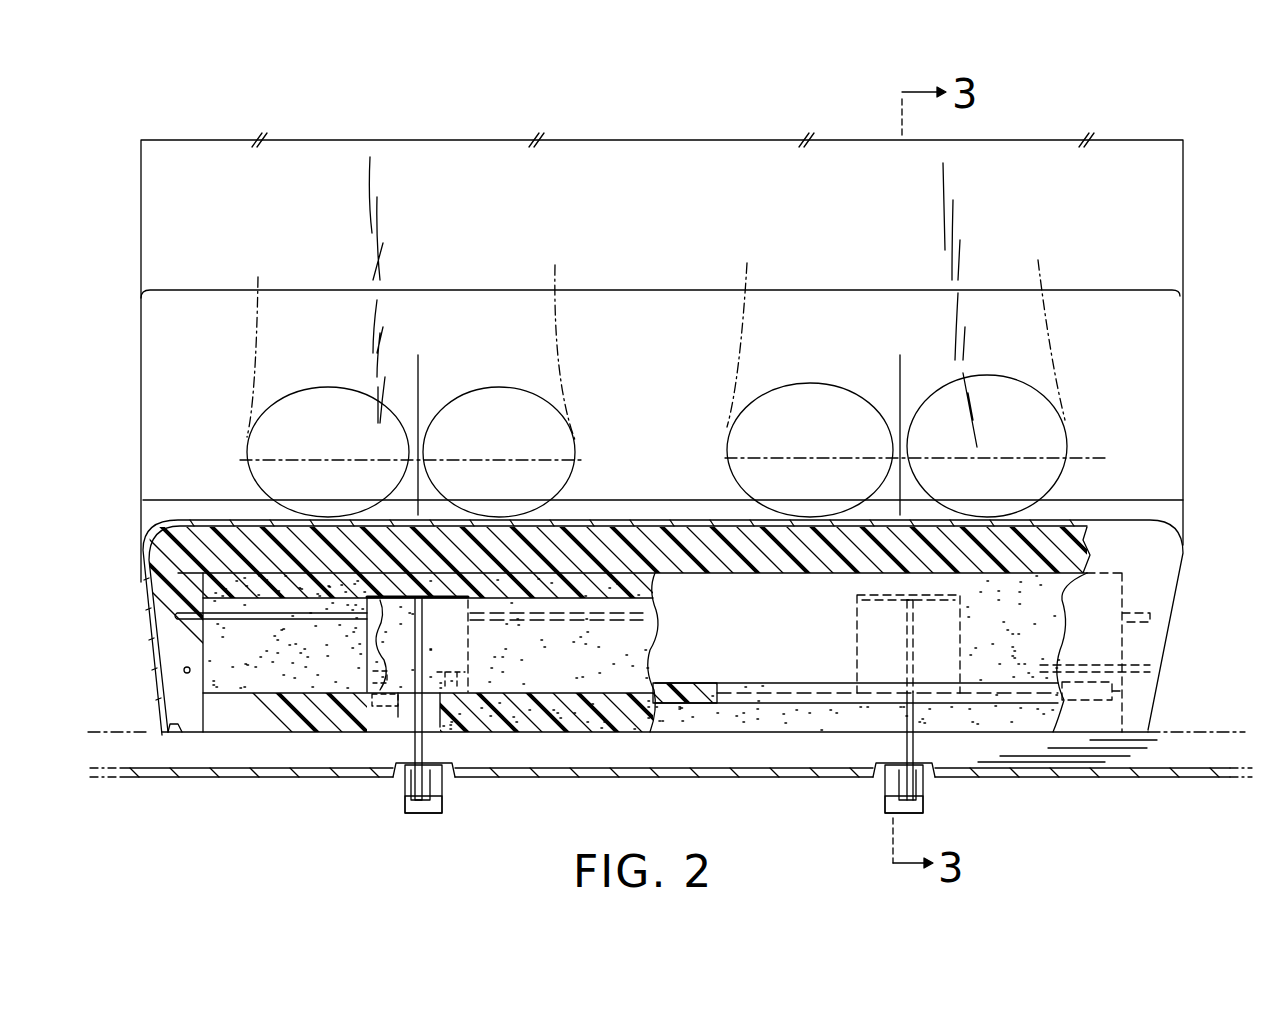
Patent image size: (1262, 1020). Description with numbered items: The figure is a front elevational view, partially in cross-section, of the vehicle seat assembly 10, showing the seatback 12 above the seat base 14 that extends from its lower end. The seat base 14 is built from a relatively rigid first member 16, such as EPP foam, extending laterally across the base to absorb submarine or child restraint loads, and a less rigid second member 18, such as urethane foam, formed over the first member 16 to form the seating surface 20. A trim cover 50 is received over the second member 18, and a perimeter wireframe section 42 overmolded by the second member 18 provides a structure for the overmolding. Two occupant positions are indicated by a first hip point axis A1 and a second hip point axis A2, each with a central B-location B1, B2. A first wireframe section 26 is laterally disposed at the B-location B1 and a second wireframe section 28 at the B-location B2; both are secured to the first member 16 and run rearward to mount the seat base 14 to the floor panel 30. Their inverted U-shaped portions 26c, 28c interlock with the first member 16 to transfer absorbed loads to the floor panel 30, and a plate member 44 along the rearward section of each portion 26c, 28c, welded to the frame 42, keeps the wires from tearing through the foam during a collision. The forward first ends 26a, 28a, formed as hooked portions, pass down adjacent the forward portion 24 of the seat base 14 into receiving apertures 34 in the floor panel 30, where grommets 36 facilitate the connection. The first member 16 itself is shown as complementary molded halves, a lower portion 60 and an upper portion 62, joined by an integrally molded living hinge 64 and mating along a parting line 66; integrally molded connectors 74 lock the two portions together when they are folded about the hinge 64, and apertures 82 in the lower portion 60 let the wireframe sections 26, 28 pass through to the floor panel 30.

The vehicle seat assembly 10 is at (1153, 115).
The seatback 12 is at (1180, 242).
The seat base 14 is at (1140, 516).
The first member 16 is at (264, 744).
The second member 18 is at (165, 570).
The seating surface 20 is at (623, 522).
The forward portion 24 is at (1102, 636).
The first wireframe section 26 is at (402, 753).
The first end of first wireframe section 26a is at (425, 808).
The inverted U-shaped portion of first wireframe section 26c is at (420, 620).
The second wireframe section 28 is at (928, 748).
The first end of second wireframe section 28a is at (923, 800).
The inverted U-shaped portion of second wireframe section 28c is at (912, 622).
The floor panel 30 is at (140, 730).
The receiving apertures 34 is at (400, 768).
The grommets 36 is at (443, 810).
The wireframe section 42 is at (184, 668).
The plate member 44 is at (359, 636).
The trim cover 50 is at (240, 523).
The lower portion 60 is at (740, 725).
The upper portion 62 is at (717, 590).
The hinge 64 is at (797, 697).
The parting line 66 is at (688, 690).
The integrally molded connector 74 is at (374, 690).
The apertures 82 is at (410, 735).
The first hip point axis A1 is at (325, 460).
The B-location of first hip point axis B1 is at (420, 365).
The second hip point axis A2 is at (820, 455).
The B-location of second hip point axis B2 is at (903, 370).